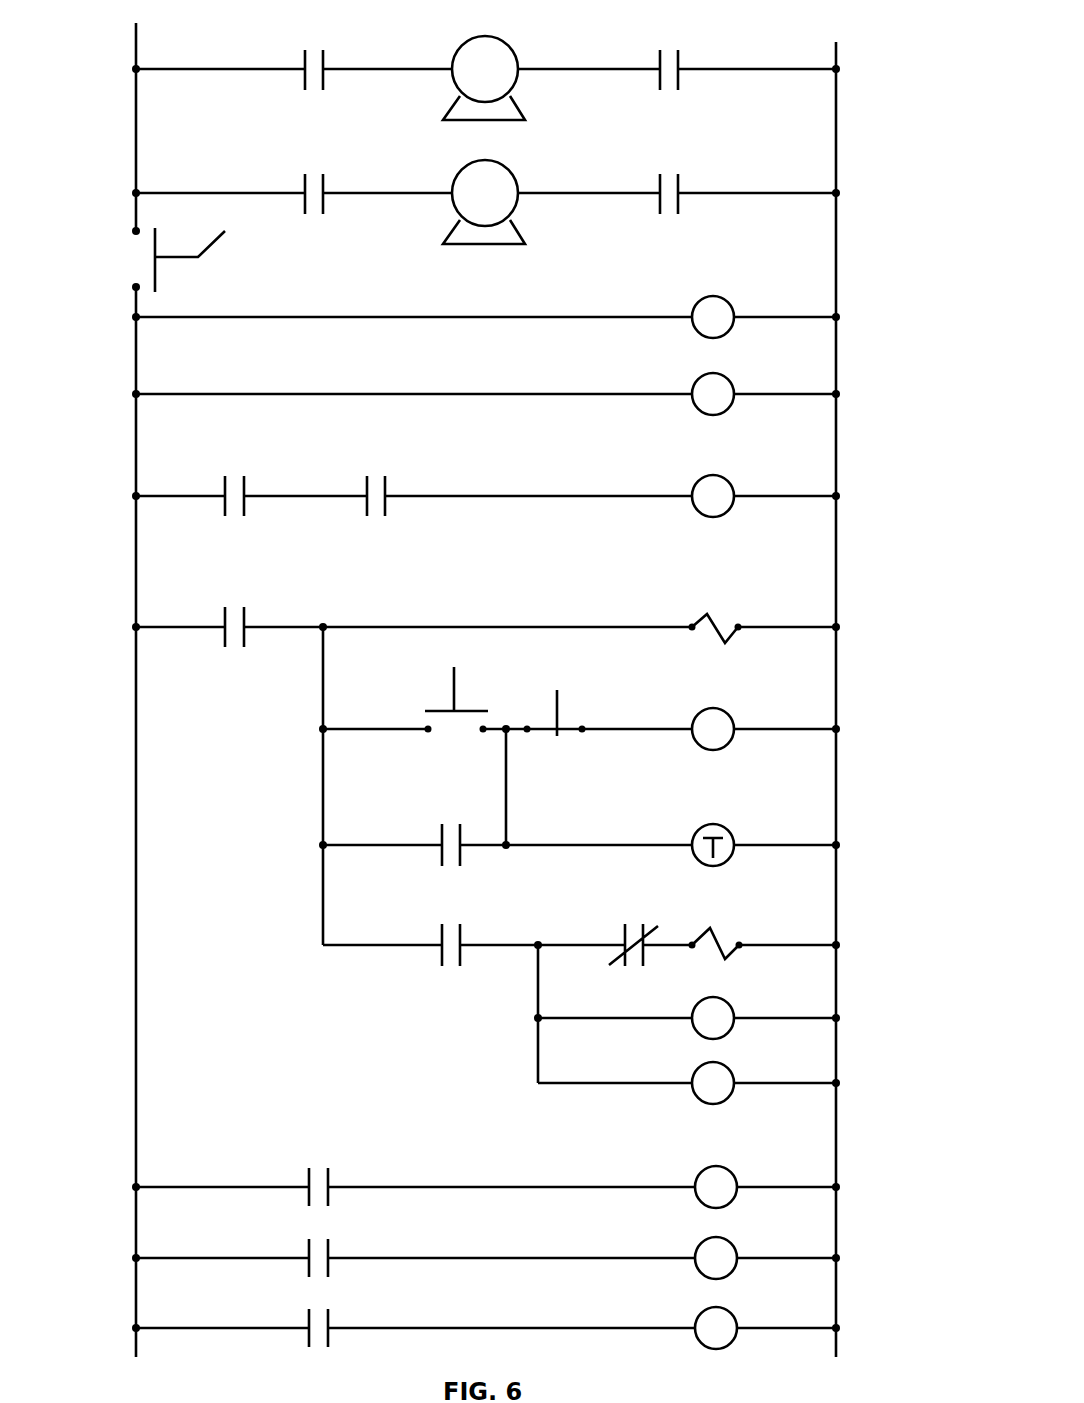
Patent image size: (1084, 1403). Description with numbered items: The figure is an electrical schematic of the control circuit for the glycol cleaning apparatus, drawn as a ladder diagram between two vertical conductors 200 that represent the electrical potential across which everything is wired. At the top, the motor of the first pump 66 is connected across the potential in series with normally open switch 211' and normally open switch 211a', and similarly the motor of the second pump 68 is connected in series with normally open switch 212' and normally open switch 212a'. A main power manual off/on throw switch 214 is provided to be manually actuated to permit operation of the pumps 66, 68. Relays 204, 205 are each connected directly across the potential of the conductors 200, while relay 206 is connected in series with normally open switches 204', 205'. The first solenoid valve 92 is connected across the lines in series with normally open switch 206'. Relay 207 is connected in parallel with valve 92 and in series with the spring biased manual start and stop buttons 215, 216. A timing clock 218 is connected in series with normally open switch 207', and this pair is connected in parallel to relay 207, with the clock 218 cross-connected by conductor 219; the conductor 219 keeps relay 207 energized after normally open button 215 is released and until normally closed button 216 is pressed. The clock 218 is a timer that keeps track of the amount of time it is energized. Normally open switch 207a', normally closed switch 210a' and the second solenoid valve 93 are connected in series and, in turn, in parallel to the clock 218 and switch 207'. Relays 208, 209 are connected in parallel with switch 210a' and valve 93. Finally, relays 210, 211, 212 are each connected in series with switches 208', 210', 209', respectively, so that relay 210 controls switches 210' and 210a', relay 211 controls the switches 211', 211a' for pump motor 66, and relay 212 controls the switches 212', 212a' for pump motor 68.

The conductor 200 is at (136, 1350).
The normally open switch 211' is at (354, 46).
The first pump 66 is at (512, 48).
The normally open switch 211a' is at (718, 47).
The normally open switch 212' is at (354, 172).
The second pump 68 is at (512, 172).
The normally open switch 212a' is at (718, 171).
The main power manual off/on throw switch 214 is at (161, 265).
The relay 204 is at (745, 308).
The relay 205 is at (745, 385).
The relay 206 is at (745, 487).
The normally open switch 204' is at (274, 473).
The normally open switch 205' is at (415, 473).
The normally open switch 206' is at (274, 604).
The first solenoid actuated flow control valve 92 is at (716, 614).
The manual start button 215 is at (466, 702).
The manual stop button 216 is at (568, 723).
The relay 207 is at (745, 718).
The conductor 219 is at (506, 805).
The normally open switch 207' is at (410, 833).
The timing clock 218 is at (724, 827).
The normally open switch 207a' is at (402, 933).
The normally closed switch 210a' is at (590, 928).
The second solenoid actuated flow control valve 93 is at (718, 928).
The relay 208 is at (746, 1008).
The relay 209 is at (746, 1073).
The normally open switch 208' is at (363, 1175).
The relay 210 is at (748, 1177).
The normally open switch 210' is at (363, 1247).
The relay 211 is at (748, 1248).
The normally open switch 209' is at (363, 1317).
The relay 212 is at (748, 1318).